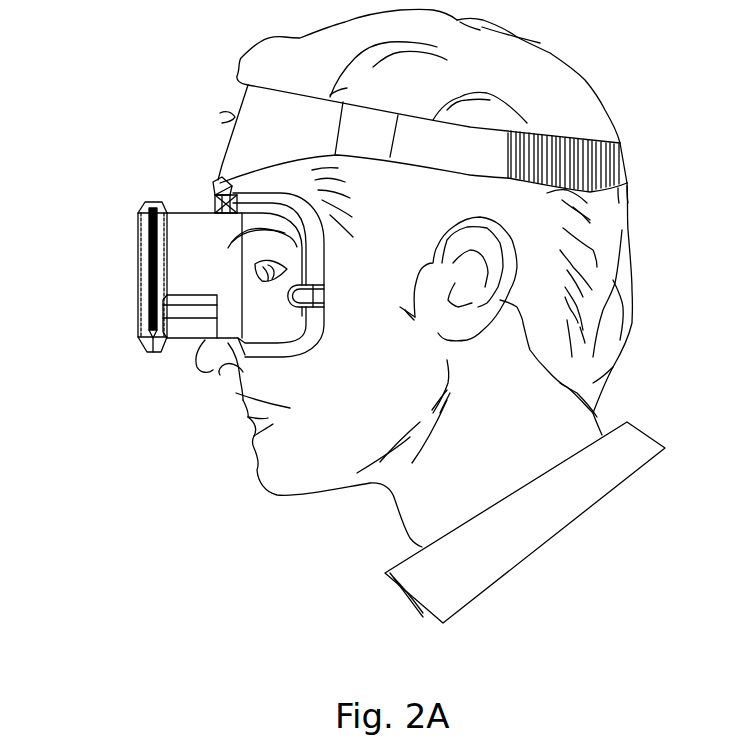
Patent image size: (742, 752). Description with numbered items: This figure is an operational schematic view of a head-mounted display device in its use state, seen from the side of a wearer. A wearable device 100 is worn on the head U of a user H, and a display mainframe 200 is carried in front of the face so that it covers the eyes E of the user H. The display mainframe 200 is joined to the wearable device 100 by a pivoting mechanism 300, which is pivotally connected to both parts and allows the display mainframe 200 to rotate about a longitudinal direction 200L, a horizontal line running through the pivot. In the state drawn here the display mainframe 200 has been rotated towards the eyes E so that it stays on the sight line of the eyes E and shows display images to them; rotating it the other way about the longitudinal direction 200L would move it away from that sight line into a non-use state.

The wearable device 100 is at (237, 122).
The display mainframe 200 is at (145, 253).
The longitudinal direction 200L is at (215, 177).
The pivoting mechanism 300 is at (213, 193).
The eyes E is at (270, 282).
The user H is at (623, 277).
The head U is at (593, 487).